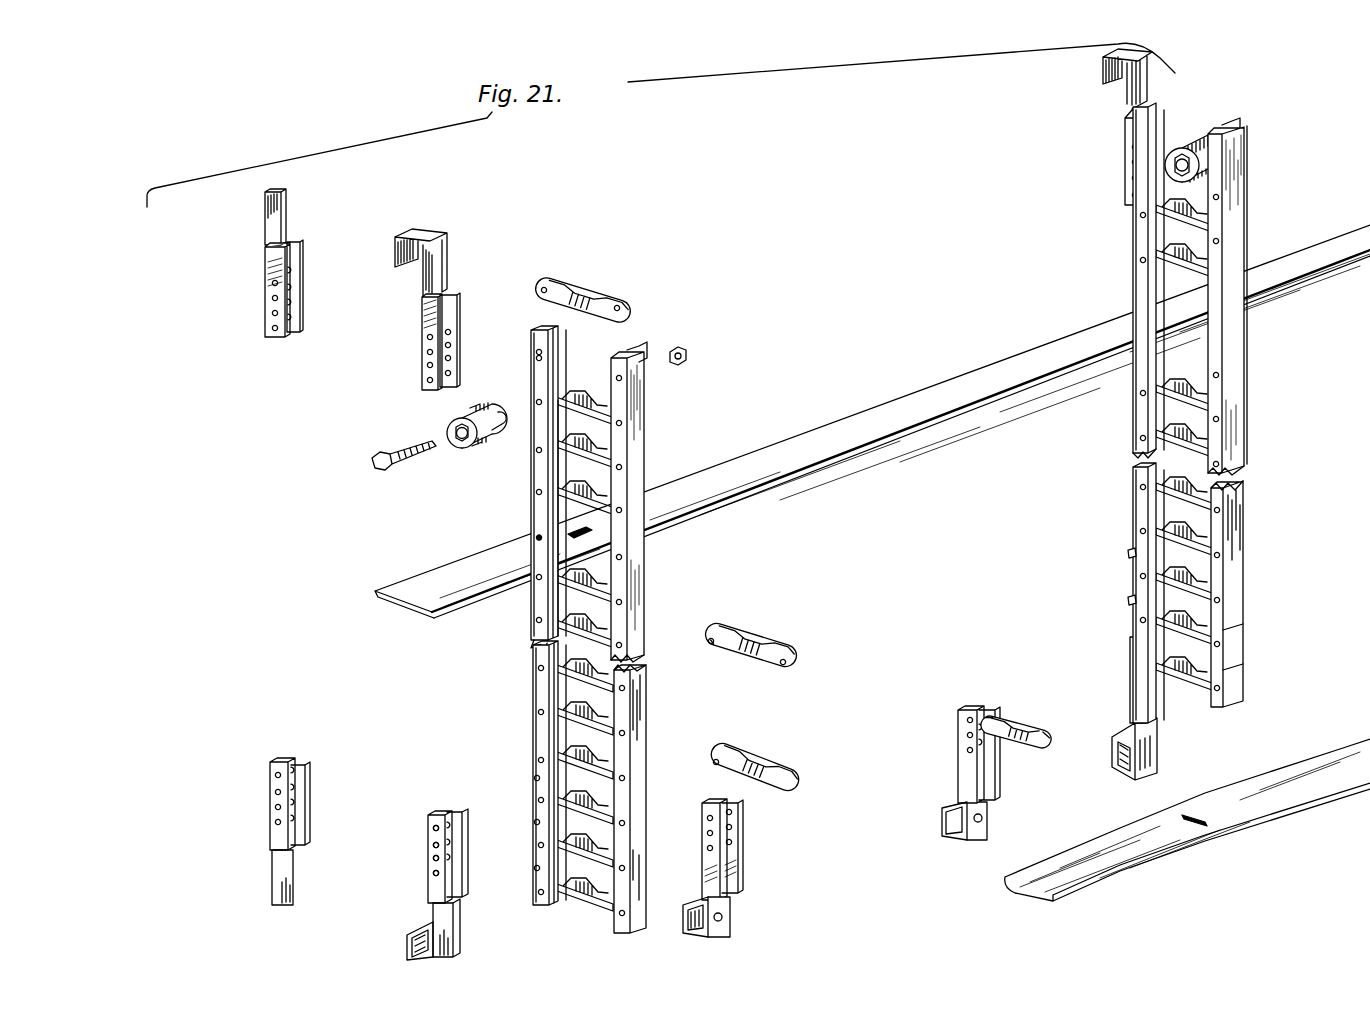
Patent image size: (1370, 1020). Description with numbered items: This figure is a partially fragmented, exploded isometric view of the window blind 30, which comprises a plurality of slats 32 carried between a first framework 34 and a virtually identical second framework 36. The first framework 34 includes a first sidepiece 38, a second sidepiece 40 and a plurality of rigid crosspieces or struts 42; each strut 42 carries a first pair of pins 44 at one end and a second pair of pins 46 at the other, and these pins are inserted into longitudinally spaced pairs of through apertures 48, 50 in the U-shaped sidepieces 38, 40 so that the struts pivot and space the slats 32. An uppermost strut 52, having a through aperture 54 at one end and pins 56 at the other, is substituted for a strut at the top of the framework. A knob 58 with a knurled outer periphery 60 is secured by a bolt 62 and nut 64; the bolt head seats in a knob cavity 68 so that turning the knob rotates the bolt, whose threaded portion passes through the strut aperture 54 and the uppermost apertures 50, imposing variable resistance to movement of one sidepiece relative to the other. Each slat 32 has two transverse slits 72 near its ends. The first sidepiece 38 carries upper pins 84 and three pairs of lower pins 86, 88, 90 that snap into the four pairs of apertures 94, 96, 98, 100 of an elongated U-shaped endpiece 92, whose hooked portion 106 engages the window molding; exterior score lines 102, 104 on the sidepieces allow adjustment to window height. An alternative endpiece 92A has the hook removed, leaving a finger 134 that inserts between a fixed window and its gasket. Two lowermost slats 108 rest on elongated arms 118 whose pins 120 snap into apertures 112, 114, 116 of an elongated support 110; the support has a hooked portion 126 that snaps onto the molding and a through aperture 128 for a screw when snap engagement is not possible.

The window blind 30 is at (733, 255).
The slats 32 is at (690, 492).
The first framework 34 is at (633, 333).
The second framework 36 is at (1217, 125).
The first sidepiece 38 is at (556, 368).
The second sidepiece 40 is at (632, 352).
The struts 42 is at (565, 410).
The first pair of pins 44 is at (710, 647).
The second pair of pins 46 is at (783, 667).
The through apertures of the first sidepiece 48 is at (548, 462).
The through apertures of the second sidepiece 50 is at (625, 468).
The uppermost strut 52 is at (590, 290).
The through aperture of the uppermost strut 54 is at (620, 302).
The pins of the uppermost strut 56 is at (540, 290).
The knob 58 is at (463, 418).
The knurled outer periphery 60 is at (486, 406).
The bolt 62 is at (415, 455).
The nut 64 is at (688, 355).
The knob cavity 68 is at (458, 450).
The slits 72 is at (575, 541).
The upper pins 84 is at (535, 358).
The lower pins 86 is at (537, 776).
The lower pins 88 is at (536, 821).
The lower pins 90 is at (536, 868).
The endpiece 92 is at (425, 323).
The endpiece 92A is at (268, 295).
The through apertures of the endpiece 94 is at (432, 872).
The through apertures of the endpiece 96 is at (432, 856).
The through apertures of the endpiece 98 is at (432, 843).
The through apertures of the endpiece 100 is at (432, 822).
The score lines 102 is at (630, 799).
The score lines 104 is at (645, 832).
The hooked portion 106 is at (410, 935).
The lowermost slats 108 is at (1230, 800).
The elongated support 110 is at (740, 872).
The through apertures of the support 112 is at (965, 750).
The through apertures of the support 114 is at (965, 735).
The through apertures of the support 116 is at (965, 717).
The elongated arm 118 is at (785, 766).
The pins of the arm 120 is at (712, 762).
The hooked portion of the support 126 is at (692, 912).
The through aperture of the hooked portion 128 is at (724, 915).
The finger 134 is at (275, 878).